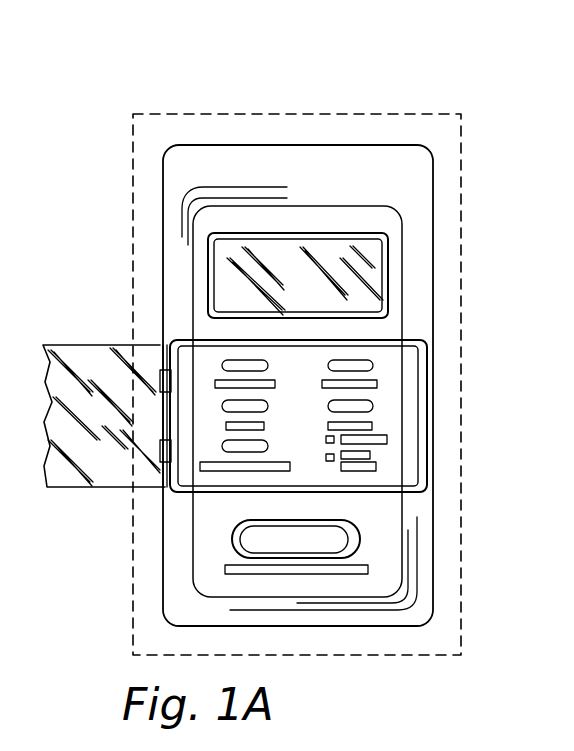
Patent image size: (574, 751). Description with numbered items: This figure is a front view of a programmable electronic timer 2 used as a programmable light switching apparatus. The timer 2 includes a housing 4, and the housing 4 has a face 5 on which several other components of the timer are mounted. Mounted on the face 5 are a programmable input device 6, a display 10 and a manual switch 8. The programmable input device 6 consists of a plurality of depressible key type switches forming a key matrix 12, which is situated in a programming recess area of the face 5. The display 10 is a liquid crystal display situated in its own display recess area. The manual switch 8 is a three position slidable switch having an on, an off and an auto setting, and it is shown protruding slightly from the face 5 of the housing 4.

The timer 2 is at (452, 64).
The housing 4 is at (433, 262).
The face 5 is at (318, 218).
The programmable input device 6 is at (410, 438).
The manual switch 8 is at (252, 546).
The display 10 is at (223, 272).
The key matrix 12 is at (358, 393).